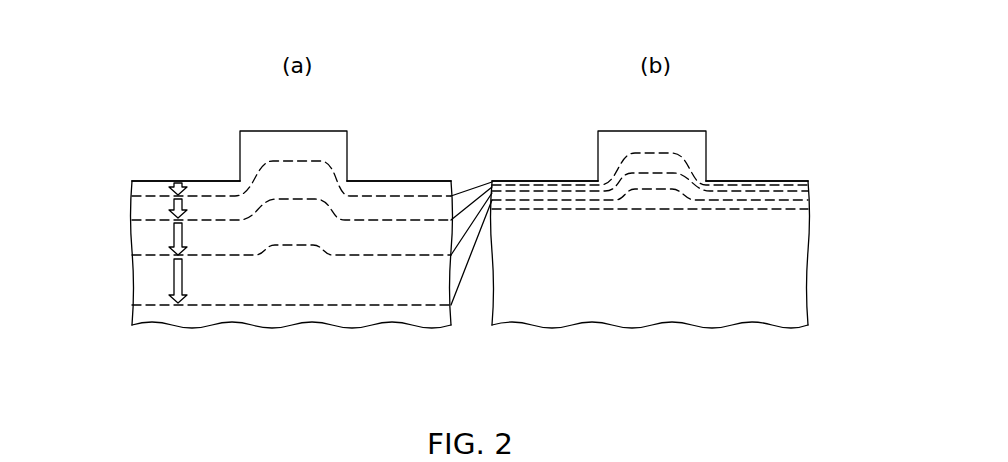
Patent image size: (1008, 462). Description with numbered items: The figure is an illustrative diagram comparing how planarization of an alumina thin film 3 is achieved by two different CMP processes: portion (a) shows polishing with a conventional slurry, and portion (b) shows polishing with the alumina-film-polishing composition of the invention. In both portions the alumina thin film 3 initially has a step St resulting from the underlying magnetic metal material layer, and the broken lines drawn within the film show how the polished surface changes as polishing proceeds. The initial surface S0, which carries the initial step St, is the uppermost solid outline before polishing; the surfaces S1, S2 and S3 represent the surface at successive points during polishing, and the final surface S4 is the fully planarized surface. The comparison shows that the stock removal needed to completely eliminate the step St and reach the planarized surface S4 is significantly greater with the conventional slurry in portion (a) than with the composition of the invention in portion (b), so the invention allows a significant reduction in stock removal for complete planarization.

The alumina thin film 3 is at (132, 322).
The step St is at (347, 160).
The initial surface S0 is at (132, 181).
The surface at a given point during polishing S1 is at (132, 196).
The surface at a given point during polishing S2 is at (132, 220).
The surface at a given point during polishing S3 is at (132, 255).
The final surface S4 is at (132, 305).